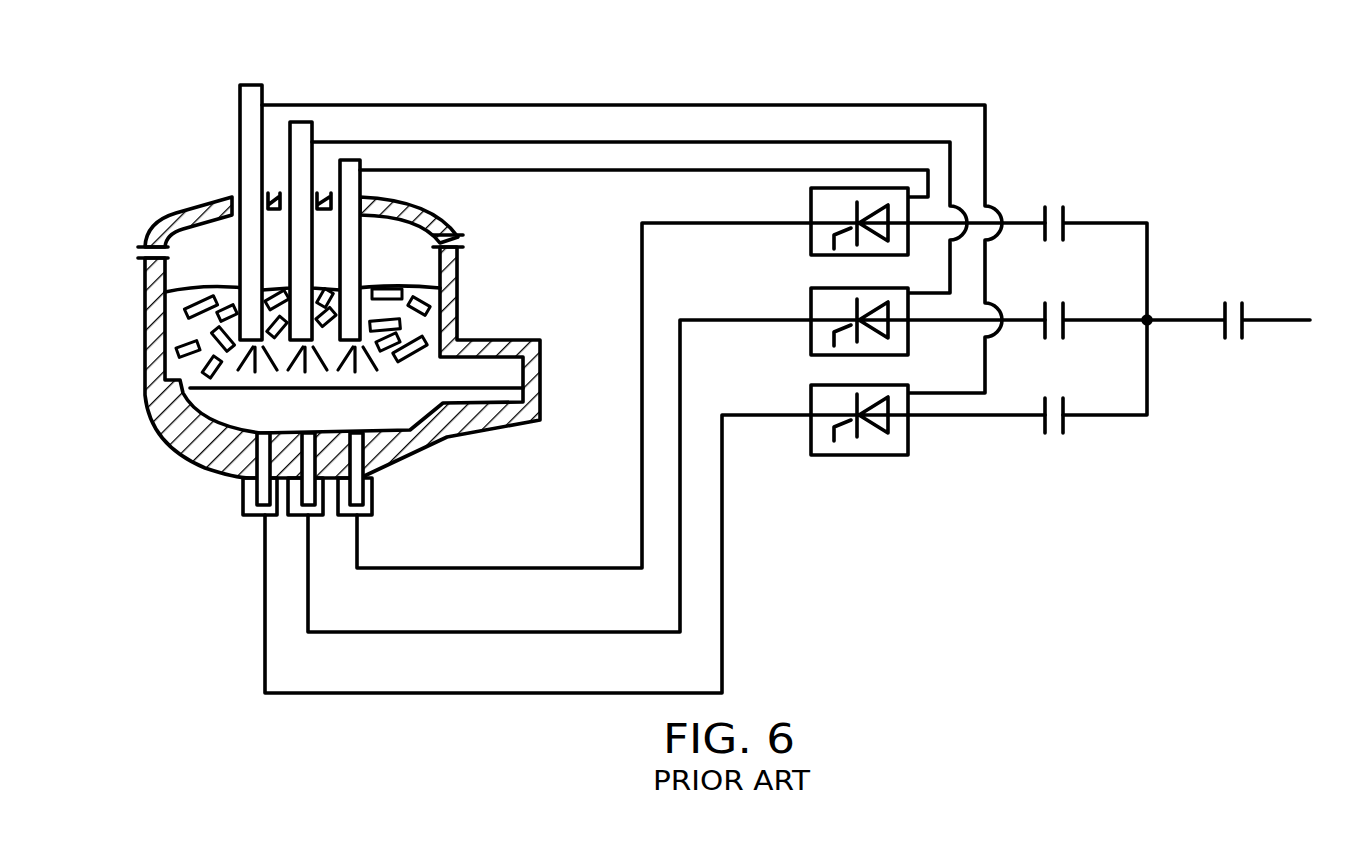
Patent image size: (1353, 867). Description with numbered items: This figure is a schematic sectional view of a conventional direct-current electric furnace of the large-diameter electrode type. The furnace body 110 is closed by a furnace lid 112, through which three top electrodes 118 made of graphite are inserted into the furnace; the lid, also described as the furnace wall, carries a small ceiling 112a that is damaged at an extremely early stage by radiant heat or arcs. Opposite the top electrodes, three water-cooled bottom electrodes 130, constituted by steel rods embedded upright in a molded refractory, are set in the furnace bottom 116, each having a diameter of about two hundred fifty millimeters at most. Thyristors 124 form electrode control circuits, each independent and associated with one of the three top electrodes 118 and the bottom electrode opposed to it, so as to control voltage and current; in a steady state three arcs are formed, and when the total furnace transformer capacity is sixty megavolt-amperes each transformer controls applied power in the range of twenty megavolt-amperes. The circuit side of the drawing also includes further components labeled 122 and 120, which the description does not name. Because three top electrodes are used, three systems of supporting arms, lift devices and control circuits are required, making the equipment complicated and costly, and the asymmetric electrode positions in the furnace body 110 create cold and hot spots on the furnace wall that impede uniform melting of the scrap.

The furnace body 110 is at (130, 313).
The furnace lid 112 is at (170, 215).
The small ceiling 112a is at (321, 190).
The furnace bottom 116 is at (217, 470).
The top electrodes 118 is at (237, 138).
The power supply capacitor 120 is at (1235, 313).
The capacitors 122 is at (1055, 210).
The thyristors 124 is at (855, 190).
The bottom electrodes 130 is at (372, 483).